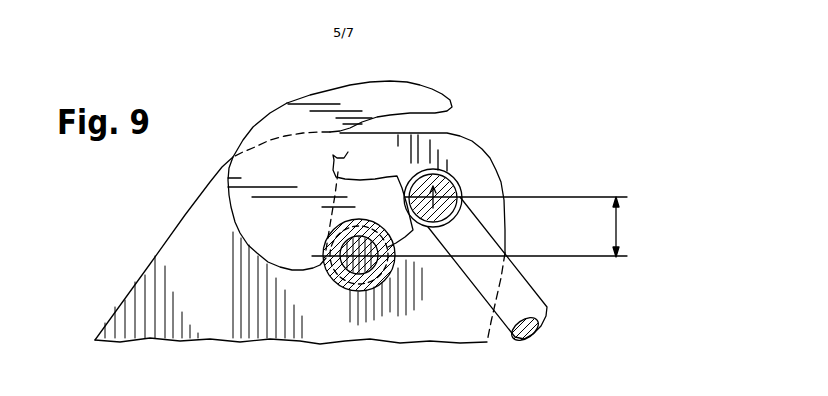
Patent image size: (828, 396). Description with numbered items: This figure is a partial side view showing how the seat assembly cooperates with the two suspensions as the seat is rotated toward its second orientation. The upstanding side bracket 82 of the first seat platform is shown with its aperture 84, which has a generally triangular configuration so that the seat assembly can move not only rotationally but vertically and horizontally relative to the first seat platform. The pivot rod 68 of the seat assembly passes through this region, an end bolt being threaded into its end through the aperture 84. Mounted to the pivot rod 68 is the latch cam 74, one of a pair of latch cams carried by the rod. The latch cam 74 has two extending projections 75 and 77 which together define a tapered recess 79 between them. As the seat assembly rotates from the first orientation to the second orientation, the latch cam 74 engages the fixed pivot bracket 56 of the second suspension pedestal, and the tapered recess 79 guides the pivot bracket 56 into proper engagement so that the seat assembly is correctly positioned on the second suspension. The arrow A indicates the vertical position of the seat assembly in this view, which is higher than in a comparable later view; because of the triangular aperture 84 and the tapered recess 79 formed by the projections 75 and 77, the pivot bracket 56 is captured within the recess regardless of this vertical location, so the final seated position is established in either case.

The latch cam 74 is at (258, 122).
The extending projection 75 is at (413, 93).
The tapered recess 79 is at (348, 152).
The aperture 84 is at (386, 180).
The pivot rod 68 is at (346, 290).
The extending projection 77 is at (403, 226).
The pivot bracket 56 is at (525, 296).
The side bracket 82 is at (191, 249).
The arrow A is at (627, 223).